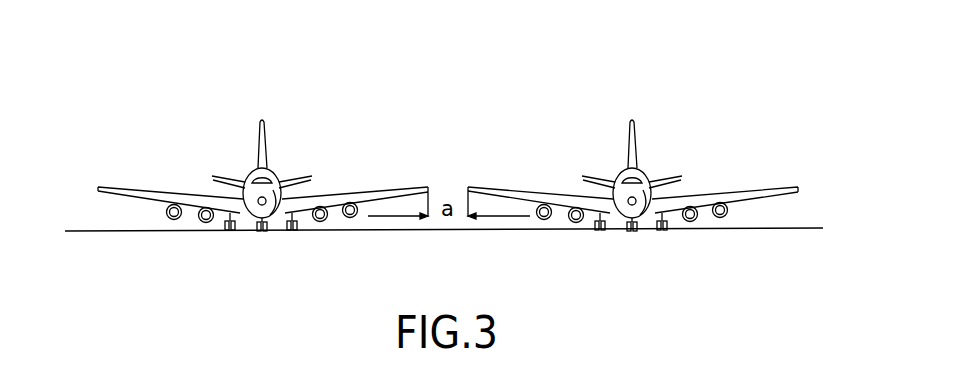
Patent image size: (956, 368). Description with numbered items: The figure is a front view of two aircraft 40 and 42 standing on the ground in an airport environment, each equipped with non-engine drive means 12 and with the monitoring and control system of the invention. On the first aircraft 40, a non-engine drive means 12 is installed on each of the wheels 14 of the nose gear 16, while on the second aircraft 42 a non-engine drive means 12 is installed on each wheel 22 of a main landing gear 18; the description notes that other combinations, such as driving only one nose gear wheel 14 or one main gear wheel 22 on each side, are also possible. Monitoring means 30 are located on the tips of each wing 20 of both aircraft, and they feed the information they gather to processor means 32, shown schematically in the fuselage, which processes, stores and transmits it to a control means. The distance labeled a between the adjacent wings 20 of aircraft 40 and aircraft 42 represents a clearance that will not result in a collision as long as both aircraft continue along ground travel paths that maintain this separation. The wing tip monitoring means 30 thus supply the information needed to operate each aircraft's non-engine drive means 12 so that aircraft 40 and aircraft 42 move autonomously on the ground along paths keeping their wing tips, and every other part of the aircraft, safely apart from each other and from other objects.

The non-engine drive means 12 is at (255, 235).
The nose gear wheel 14 is at (250, 233).
The nose gear 16 is at (258, 250).
The main landing gear 18 is at (598, 240).
The wing 20 is at (190, 197).
The main landing gear wheel 22 is at (587, 228).
The monitoring means 30 is at (100, 188).
The processor means 32 is at (283, 178).
The aircraft 40 is at (152, 117).
The aircraft 42 is at (706, 96).